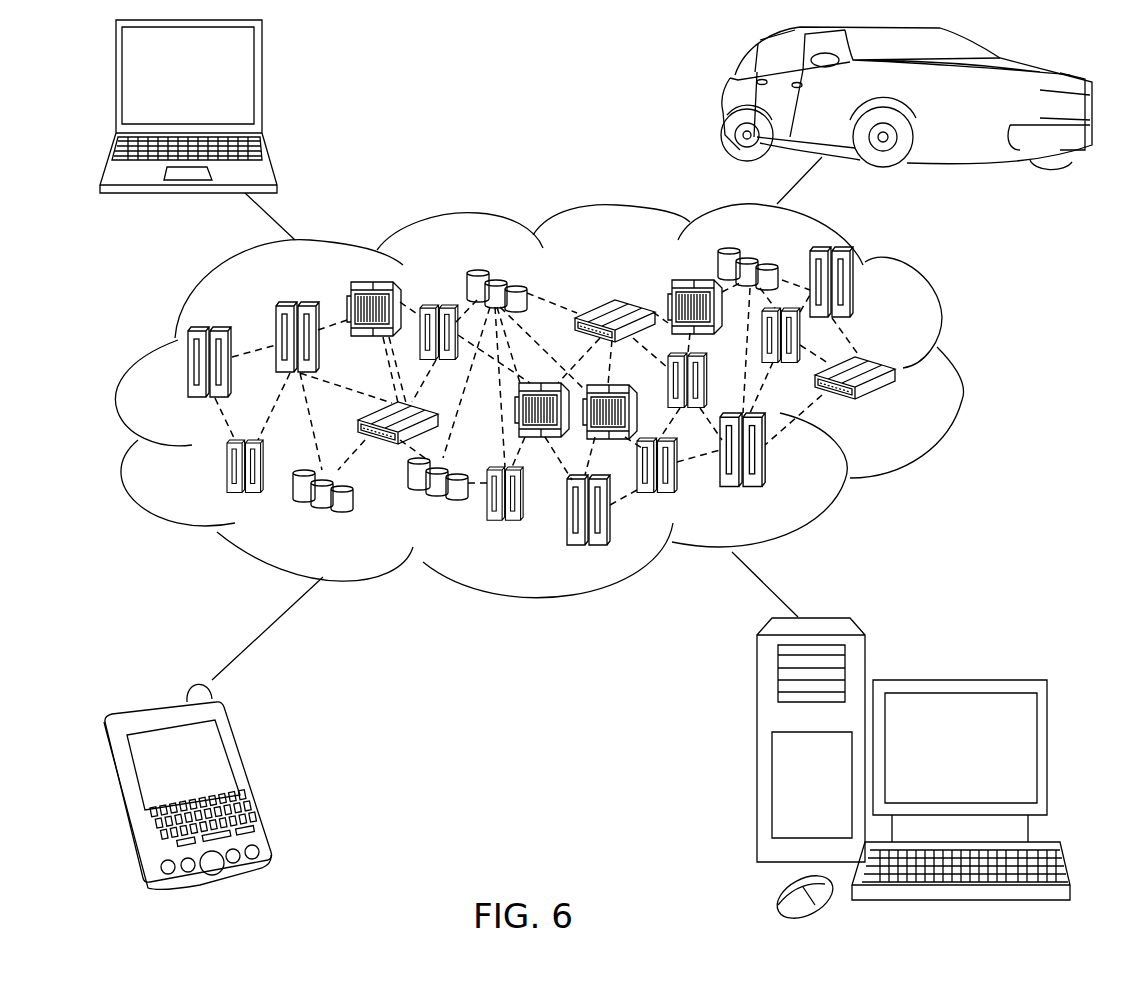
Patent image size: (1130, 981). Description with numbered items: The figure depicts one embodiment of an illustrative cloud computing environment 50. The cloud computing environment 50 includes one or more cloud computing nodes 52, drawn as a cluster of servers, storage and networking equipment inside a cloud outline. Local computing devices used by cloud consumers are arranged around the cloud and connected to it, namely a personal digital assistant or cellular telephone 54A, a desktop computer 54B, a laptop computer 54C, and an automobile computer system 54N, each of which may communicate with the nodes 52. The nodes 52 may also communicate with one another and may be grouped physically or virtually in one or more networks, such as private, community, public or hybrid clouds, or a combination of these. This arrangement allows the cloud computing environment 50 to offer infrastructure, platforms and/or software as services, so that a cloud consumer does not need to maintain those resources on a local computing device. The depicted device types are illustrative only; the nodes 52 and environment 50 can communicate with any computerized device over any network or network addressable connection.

The cloud computing environment 50 is at (960, 372).
The cloud computing nodes 52 is at (906, 412).
The personal digital assistant or cellular telephone 54A is at (250, 778).
The desktop computer 54B is at (957, 677).
The laptop computer 54C is at (263, 83).
The automobile computer system 54N is at (722, 100).